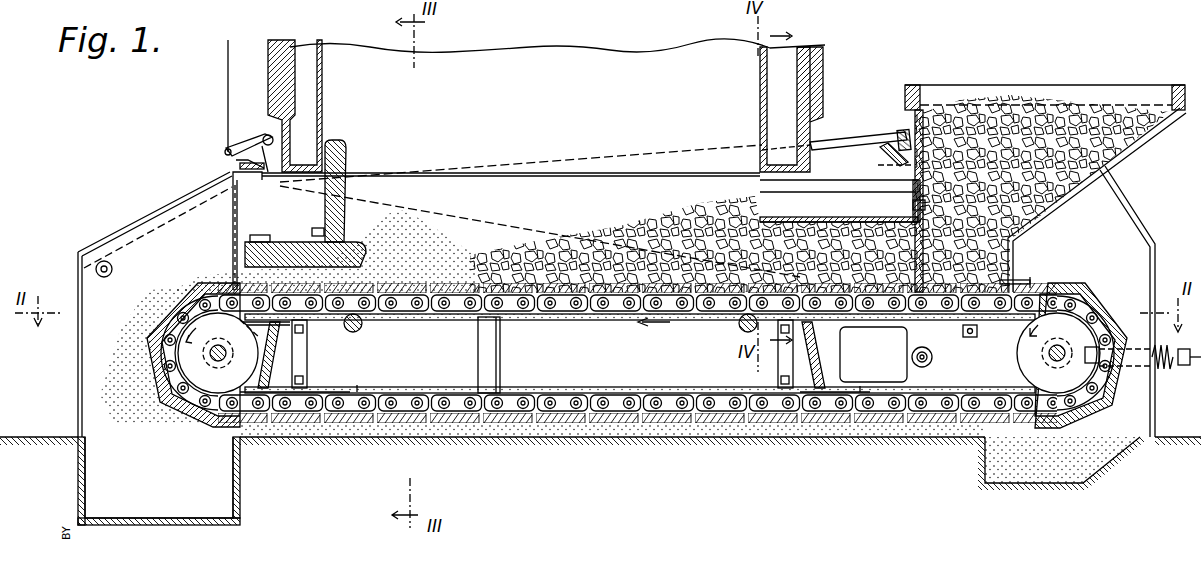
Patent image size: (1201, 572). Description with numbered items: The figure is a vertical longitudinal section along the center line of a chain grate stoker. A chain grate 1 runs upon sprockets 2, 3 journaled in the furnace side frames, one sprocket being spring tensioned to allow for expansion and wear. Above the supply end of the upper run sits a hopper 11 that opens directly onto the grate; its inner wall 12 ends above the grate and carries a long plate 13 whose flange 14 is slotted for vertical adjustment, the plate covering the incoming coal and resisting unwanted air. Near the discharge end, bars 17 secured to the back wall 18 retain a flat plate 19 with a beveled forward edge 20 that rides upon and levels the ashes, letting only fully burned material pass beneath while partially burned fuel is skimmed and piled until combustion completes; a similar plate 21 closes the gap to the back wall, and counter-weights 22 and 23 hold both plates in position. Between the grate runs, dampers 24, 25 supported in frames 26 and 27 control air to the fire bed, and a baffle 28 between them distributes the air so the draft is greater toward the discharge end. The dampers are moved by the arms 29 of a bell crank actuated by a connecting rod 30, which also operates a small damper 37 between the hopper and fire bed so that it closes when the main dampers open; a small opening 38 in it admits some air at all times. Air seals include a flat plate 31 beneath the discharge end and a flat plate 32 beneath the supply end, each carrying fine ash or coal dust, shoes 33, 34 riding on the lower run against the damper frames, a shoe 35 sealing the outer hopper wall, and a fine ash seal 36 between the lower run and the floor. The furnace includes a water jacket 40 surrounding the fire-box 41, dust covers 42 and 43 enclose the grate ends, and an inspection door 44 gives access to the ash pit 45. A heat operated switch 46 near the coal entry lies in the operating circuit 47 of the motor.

The chain grate 1 is at (590, 314).
The sprocket 2 is at (219, 353).
The sprocket 3 is at (1109, 353).
The hopper 11 is at (1112, 160).
The inner wall of hopper 12 is at (915, 112).
The plate 13 is at (839, 201).
The flange 14 is at (913, 204).
The bars 17 is at (240, 212).
The back wall of furnace 18 is at (263, 182).
The flat plate 19 is at (285, 250).
The beveled forward edge 20 is at (372, 240).
The plate 21 is at (346, 160).
The counter-weight 22 is at (261, 229).
The counter-weight 23 is at (318, 228).
The damper 24 is at (275, 356).
The damper 25 is at (822, 362).
The frame 26 is at (307, 354).
The frame 27 is at (786, 368).
The baffle 28 is at (502, 348).
The arms of bell crank 29 is at (246, 145).
The connecting rod 30 is at (226, 96).
The flat plate 31 is at (268, 327).
The flat plate 32 is at (940, 320).
The shoe 33 is at (360, 392).
The shoe 34 is at (860, 392).
The shoe 35 is at (1032, 282).
The fine ash seal 36 is at (556, 437).
The small damper 37 is at (880, 150).
The small opening 38 is at (898, 136).
The water jacket 40 is at (305, 102).
The fire-box 41 is at (557, 74).
The dust cover 42 is at (78, 380).
The dust cover 43 is at (1152, 247).
The inspection door 44 is at (138, 210).
The ash pit 45 is at (159, 481).
The heat operated switch 46 is at (740, 326).
The operating circuit 47 is at (362, 324).